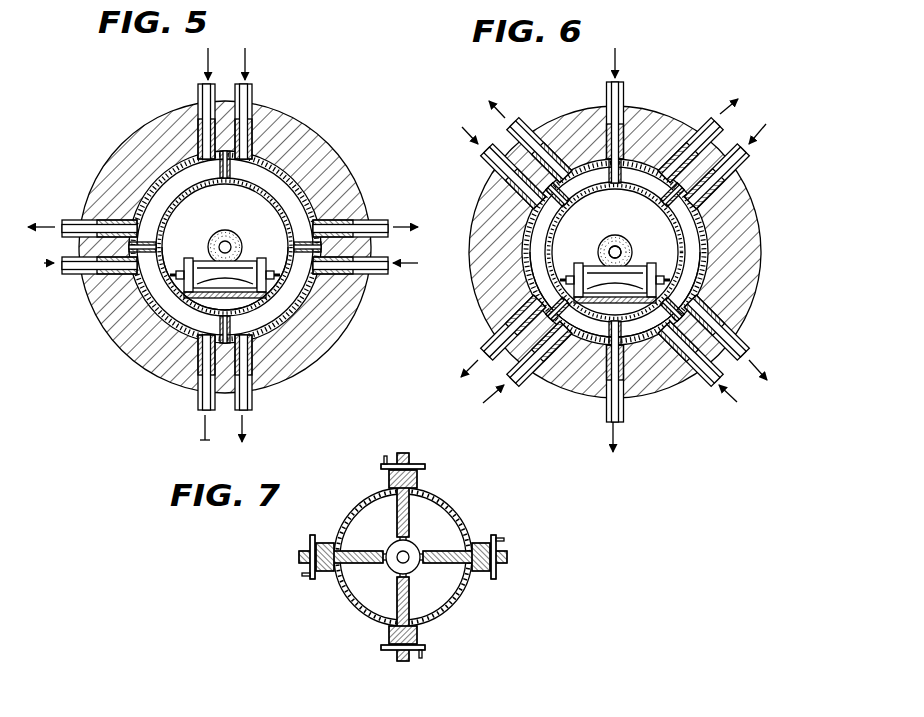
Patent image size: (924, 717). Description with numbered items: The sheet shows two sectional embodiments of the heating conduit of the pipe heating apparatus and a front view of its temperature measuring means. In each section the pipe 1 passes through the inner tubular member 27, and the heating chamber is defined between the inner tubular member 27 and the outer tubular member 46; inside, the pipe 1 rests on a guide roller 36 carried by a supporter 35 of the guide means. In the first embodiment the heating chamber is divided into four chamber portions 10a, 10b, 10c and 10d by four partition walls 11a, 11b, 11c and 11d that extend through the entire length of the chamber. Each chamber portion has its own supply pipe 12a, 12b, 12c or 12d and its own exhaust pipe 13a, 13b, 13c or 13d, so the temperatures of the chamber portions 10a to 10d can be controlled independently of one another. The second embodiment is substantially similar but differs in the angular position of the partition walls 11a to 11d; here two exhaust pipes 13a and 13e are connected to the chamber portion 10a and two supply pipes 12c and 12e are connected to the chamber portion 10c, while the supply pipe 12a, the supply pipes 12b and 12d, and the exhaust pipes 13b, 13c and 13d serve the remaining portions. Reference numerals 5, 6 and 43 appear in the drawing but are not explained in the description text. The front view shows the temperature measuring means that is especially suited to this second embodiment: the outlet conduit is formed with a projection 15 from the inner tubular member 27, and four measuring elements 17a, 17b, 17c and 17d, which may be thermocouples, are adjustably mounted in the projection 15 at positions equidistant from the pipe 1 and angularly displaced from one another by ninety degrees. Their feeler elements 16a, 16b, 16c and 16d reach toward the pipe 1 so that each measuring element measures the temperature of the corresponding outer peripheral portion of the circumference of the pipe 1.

In FIG. 5, the pipe 1 is at (214, 236).
In FIG. 6, the pipe 1 is at (621, 236).
In FIG. 7, the pipe 1 is at (398, 572).
In FIG. 6, the inner liner 5 is at (548, 215).
In FIG. 6, the guide roller assembly 6 is at (562, 262).
In FIG. 5, the chamber portion 10a is at (290, 178).
In FIG. 6, the chamber portion 10a is at (597, 170).
In FIG. 5, the chamber portion 10b is at (178, 162).
In FIG. 6, the chamber portion 10b is at (499, 279).
In FIG. 5, the chamber portion 10c is at (152, 320).
In FIG. 6, the chamber portion 10c is at (603, 365).
In FIG. 5, the chamber portion 10d is at (284, 356).
In FIG. 6, the chamber portion 10d is at (713, 268).
In FIG. 5, the partition wall 11a is at (258, 152).
In FIG. 6, the partition wall 11a is at (548, 186).
In FIG. 5, the partition wall 11b is at (133, 260).
In FIG. 6, the partition wall 11b is at (552, 318).
In FIG. 5, the partition wall 11c is at (232, 330).
In FIG. 6, the partition wall 11c is at (672, 318).
In FIG. 5, the partition wall 11d is at (322, 262).
In FIG. 6, the partition wall 11d is at (690, 180).
In FIG. 5, the supply pipe 12a is at (254, 100).
In FIG. 6, the supply pipe 12a is at (623, 100).
In FIG. 5, the supply pipe 12b is at (201, 105).
In FIG. 6, the supply pipe 12b is at (488, 142).
In FIG. 5, the supply pipe 12c is at (65, 270).
In FIG. 6, the supply pipe 12c is at (517, 388).
In FIG. 5, the supply pipe 12d is at (386, 270).
In FIG. 6, the supply pipe 12d is at (747, 160).
In FIG. 6, the supply pipe 12e is at (715, 392).
In FIG. 5, the exhaust pipe 13a is at (396, 216).
In FIG. 6, the exhaust pipe 13a is at (714, 124).
In FIG. 5, the exhaust pipe 13b is at (72, 220).
In FIG. 6, the exhaust pipe 13b is at (483, 362).
In FIG. 5, the exhaust pipe 13c is at (200, 402).
In FIG. 6, the exhaust pipe 13c is at (624, 414).
In FIG. 5, the exhaust pipe 13d is at (250, 402).
In FIG. 6, the exhaust pipe 13d is at (750, 368).
In FIG. 6, the exhaust pipe 13e is at (520, 127).
In FIG. 7, the projection 15 is at (445, 502).
In FIG. 7, the feeler element 16a is at (396, 525).
In FIG. 7, the feeler element 16b is at (384, 568).
In FIG. 7, the feeler element 16c is at (420, 582).
In FIG. 7, the feeler element 16d is at (432, 568).
In FIG. 7, the measuring element 17a is at (430, 438).
In FIG. 7, the measuring element 17b is at (300, 562).
In FIG. 7, the measuring element 17c is at (378, 675).
In FIG. 7, the measuring element 17d is at (505, 562).
In FIG. 5, the inner tubular member 27 is at (297, 338).
In FIG. 6, the inner tubular member 27 is at (707, 240).
In FIG. 5, the supporter 35 is at (178, 228).
In FIG. 5, the guide roller 36 is at (166, 190).
In FIG. 5, the housing body 43 is at (330, 185).
In FIG. 6, the housing body 43 is at (722, 215).
In FIG. 5, the outer tubular member 46 is at (348, 200).
In FIG. 6, the outer tubular member 46 is at (700, 293).